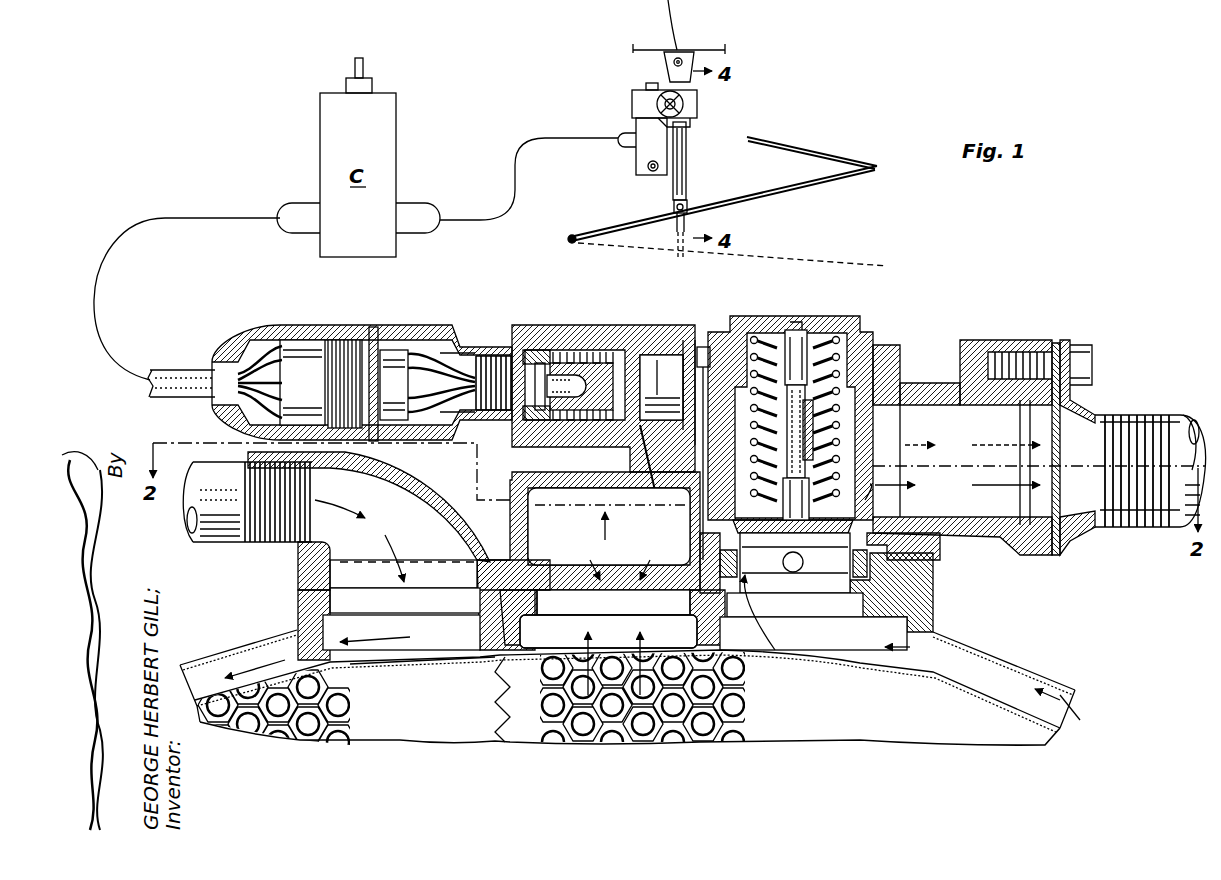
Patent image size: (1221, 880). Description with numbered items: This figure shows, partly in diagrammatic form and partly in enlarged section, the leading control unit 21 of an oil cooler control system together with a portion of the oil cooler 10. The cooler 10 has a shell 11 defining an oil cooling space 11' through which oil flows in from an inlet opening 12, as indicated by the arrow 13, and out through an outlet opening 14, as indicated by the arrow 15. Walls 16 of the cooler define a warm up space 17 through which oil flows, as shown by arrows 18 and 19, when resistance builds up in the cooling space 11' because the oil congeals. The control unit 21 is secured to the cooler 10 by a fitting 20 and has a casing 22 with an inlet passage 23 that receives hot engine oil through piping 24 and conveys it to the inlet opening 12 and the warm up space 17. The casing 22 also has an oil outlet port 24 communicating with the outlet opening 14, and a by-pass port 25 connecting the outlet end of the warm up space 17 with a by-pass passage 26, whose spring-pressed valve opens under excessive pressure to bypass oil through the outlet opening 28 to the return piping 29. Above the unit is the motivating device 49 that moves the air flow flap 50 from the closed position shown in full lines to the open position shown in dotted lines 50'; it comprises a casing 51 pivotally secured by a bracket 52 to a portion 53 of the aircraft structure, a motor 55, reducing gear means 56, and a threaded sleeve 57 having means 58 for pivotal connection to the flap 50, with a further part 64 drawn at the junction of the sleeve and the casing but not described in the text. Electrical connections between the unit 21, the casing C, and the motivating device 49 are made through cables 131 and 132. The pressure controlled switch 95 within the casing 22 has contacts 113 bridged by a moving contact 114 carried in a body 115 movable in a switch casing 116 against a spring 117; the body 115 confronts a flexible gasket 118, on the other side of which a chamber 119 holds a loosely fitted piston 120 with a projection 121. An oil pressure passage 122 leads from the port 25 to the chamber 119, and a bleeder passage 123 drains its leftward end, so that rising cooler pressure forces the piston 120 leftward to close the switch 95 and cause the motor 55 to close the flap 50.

The oil cooler 10 is at (920, 752).
The shell 11 is at (475, 708).
The oil cooling space 11' is at (613, 729).
The inlet opening 12 is at (392, 665).
The arrow 13 is at (440, 636).
The outlet opening 14 is at (572, 646).
The arrow 15 is at (588, 565).
The walls 16 is at (222, 650).
The warm up space 17 is at (200, 672).
The arrow 18 is at (262, 660).
The arrow 19 is at (940, 675).
The fitting 20 is at (298, 600).
The leading control unit 21 is at (700, 320).
The casing 22 is at (908, 355).
The inlet passage 23 is at (405, 512).
The piping / oil outlet port 24 is at (220, 548).
The by-pass port 25 is at (932, 580).
The by-pass passage 26 is at (888, 410).
The outlet opening 28 is at (1035, 425).
The return piping 29 is at (1186, 418).
The motivating device 49 is at (710, 102).
The flap 50 is at (725, 190).
The flap open position 50' is at (732, 244).
The casing 51 is at (668, 72).
The bracket 52 is at (725, 55).
The aircraft structure portion 53 is at (633, 50).
The motor 55 is at (641, 160).
The reducing gear means 56 is at (640, 105).
The threaded sleeve 57 is at (688, 170).
The pivotal connecting means 58 is at (672, 208).
The yoke 64 is at (683, 131).
The pressure controlled switch 95 is at (580, 348).
The contacts 113 is at (530, 375).
The moving contact 114 is at (540, 360).
The body 115 is at (610, 372).
The switch casing 116 is at (553, 360).
The spring 117 is at (592, 360).
The gasket / diaphragm 118 is at (652, 355).
The chamber 119 is at (680, 332).
The piston 120 is at (686, 334).
The projection 121 is at (648, 402).
The oil pressure passage 122 is at (705, 482).
The bleeder passage 123 is at (628, 498).
The cable 131 is at (112, 310).
The cable 132 is at (518, 175).